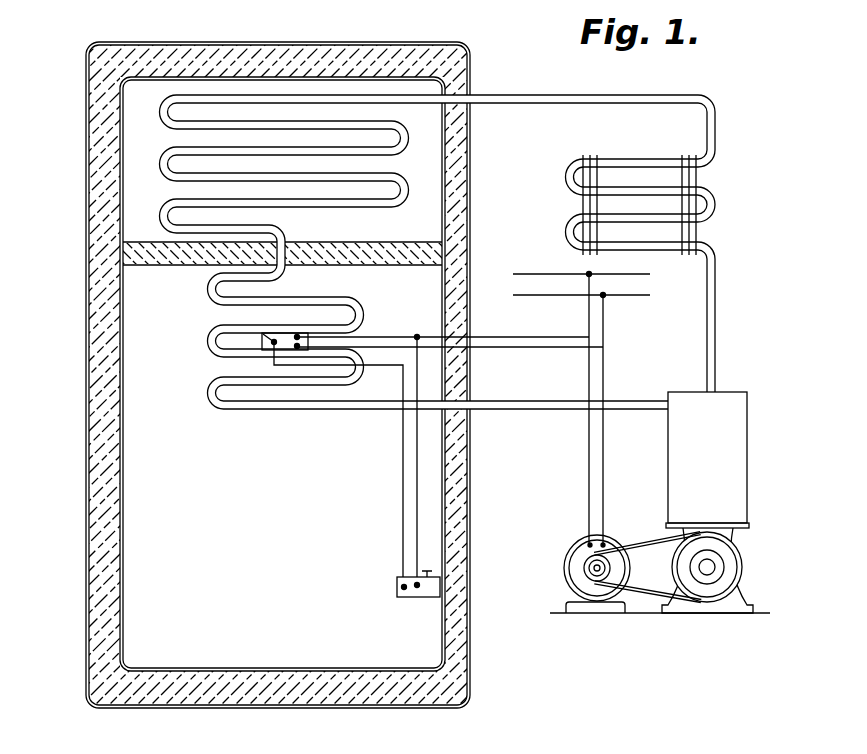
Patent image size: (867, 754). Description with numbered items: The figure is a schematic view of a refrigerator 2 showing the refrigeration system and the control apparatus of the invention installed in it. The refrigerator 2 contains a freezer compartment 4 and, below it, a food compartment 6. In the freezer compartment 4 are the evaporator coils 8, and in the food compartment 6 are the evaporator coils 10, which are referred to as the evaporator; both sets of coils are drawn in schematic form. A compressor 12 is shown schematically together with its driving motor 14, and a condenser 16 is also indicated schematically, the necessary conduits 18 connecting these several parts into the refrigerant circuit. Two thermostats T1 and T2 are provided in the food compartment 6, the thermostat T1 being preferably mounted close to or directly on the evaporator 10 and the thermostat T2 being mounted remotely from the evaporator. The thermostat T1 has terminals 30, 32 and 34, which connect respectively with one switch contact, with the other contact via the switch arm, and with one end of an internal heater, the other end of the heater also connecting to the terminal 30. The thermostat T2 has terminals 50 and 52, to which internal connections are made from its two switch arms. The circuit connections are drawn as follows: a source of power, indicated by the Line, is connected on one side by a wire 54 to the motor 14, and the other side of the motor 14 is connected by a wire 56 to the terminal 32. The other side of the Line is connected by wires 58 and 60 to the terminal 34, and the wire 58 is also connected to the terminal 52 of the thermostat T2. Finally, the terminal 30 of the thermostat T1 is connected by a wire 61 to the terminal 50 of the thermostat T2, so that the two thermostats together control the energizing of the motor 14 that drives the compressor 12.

The refrigerator 2 is at (74, 337).
The freezer compartment 4 is at (426, 170).
The food compartment 6 is at (271, 514).
The evaporator coils 8 is at (166, 185).
The evaporator coils 10 is at (378, 314).
The compressor 12 is at (668, 482).
The driving motor 14 is at (566, 572).
The condenser 16 is at (730, 193).
The conduits 18 is at (541, 105).
The terminal 30 is at (272, 344).
The terminal 32 is at (298, 345).
The terminal 34 is at (298, 345).
The terminal 50 is at (403, 586).
The terminal 52 is at (417, 590).
The wire 54 is at (605, 361).
The wire 56 is at (546, 349).
The wire 58 is at (559, 336).
The wire 60 is at (391, 337).
The wire 61 is at (404, 516).
The thermostat T1 is at (263, 337).
The thermostat T2 is at (397, 595).